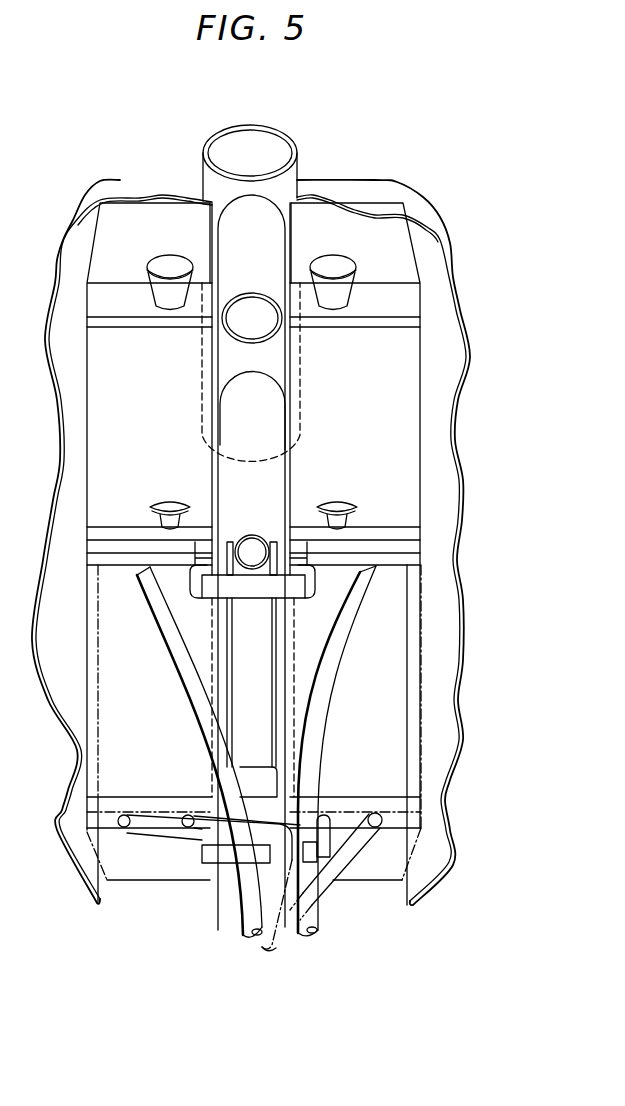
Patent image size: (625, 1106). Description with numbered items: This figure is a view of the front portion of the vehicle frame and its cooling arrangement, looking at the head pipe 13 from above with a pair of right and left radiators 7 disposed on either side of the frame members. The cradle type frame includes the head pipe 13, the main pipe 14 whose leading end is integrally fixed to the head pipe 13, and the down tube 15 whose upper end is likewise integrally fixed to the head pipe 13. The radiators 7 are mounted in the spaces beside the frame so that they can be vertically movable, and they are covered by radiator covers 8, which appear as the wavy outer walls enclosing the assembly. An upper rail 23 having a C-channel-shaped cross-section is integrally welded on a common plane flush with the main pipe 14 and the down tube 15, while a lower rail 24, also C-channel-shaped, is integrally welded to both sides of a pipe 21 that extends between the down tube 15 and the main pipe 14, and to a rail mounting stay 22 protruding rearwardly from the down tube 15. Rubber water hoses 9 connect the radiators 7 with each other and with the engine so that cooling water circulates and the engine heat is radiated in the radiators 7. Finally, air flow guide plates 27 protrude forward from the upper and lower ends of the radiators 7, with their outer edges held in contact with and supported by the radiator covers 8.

The radiator 7 is at (407, 500).
The radiator cover 8 is at (452, 357).
The hose 9 is at (342, 610).
The head pipe 13 is at (297, 152).
The main pipe 14 is at (247, 215).
The down tube 15 is at (230, 905).
The pipe 21 is at (248, 535).
The rail mounting stay 22 is at (258, 780).
The upper rail 23 is at (283, 415).
The lower rail 24 is at (273, 702).
The air flow guide plate 27 is at (402, 255).